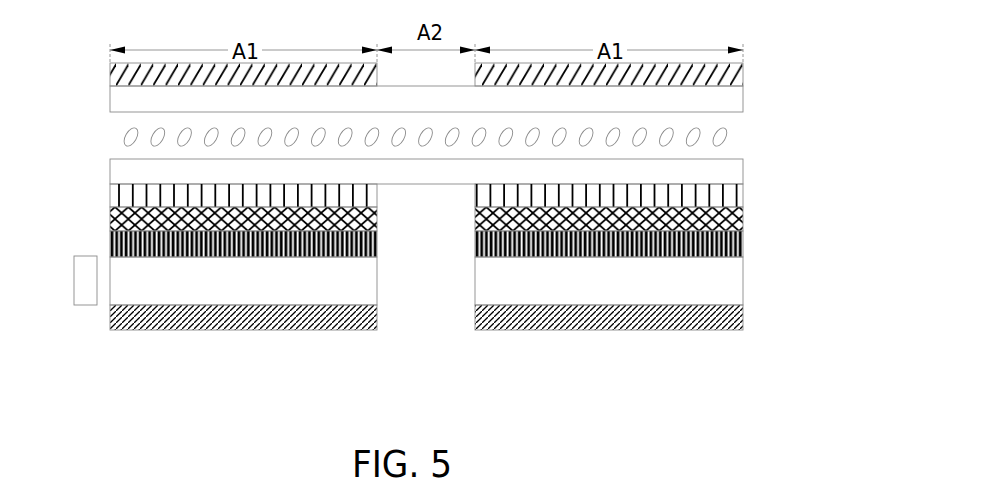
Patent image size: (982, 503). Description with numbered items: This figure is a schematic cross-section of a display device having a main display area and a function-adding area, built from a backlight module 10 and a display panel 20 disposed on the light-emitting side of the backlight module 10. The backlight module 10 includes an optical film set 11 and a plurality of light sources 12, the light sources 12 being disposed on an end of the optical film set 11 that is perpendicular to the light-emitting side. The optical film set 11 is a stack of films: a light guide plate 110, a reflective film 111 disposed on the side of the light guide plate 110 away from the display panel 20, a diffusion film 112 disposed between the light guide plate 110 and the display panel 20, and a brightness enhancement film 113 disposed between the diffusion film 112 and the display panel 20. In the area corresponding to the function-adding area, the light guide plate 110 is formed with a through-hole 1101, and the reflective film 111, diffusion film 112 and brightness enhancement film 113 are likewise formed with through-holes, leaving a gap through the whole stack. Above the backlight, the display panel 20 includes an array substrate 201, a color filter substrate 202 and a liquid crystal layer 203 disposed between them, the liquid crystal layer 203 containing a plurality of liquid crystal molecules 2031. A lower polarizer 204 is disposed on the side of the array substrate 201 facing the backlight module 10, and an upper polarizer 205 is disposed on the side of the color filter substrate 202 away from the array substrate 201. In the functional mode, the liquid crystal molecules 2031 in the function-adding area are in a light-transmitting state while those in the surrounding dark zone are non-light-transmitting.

The display panel 20 is at (97, 205).
The upper polarizer 205 is at (743, 75).
The color filter substrate 202 is at (743, 100).
The liquid crystal molecules 2031 is at (724, 134).
The liquid crystal layer 203 is at (510, 117).
The array substrate 201 is at (743, 167).
The lower polarizer 204 is at (743, 194).
The backlight module 10 is at (65, 210).
The optical film set 11 is at (853, 183).
The brightness enhancement film 113 is at (743, 218).
The diffusion film 112 is at (743, 245).
The light guide plate 110 is at (743, 287).
The reflective film 111 is at (743, 317).
The light sources 12 is at (87, 305).
The through-hole 1101 is at (427, 297).